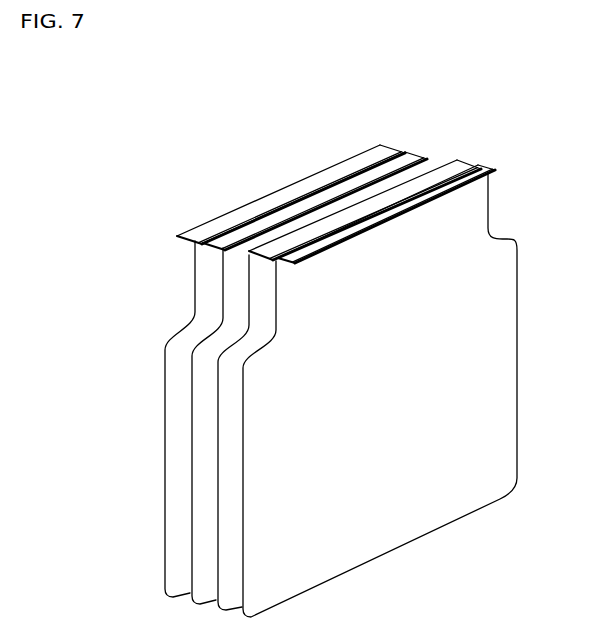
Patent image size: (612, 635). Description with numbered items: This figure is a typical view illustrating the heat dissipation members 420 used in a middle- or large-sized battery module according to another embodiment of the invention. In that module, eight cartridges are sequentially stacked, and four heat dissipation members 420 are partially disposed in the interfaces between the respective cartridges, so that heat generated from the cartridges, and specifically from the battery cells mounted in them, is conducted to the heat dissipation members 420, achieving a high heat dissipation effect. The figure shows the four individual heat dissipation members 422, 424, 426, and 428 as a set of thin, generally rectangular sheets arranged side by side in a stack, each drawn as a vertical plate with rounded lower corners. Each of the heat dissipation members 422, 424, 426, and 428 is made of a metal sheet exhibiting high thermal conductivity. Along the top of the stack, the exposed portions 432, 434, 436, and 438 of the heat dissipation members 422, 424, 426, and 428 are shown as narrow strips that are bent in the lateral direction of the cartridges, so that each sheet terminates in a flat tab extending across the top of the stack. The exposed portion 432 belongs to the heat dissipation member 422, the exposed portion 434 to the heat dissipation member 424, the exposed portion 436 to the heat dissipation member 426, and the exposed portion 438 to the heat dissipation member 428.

The heat dissipation members 420 is at (56, 111).
The heat dissipation member 422 is at (206, 308).
The heat dissipation member 424 is at (206, 367).
The heat dissipation member 426 is at (225, 432).
The heat dissipation member 428 is at (381, 490).
The exposed portion 432 is at (270, 202).
The exposed portion 434 is at (353, 178).
The exposed portion 436 is at (491, 183).
The exposed portion 438 is at (432, 196).